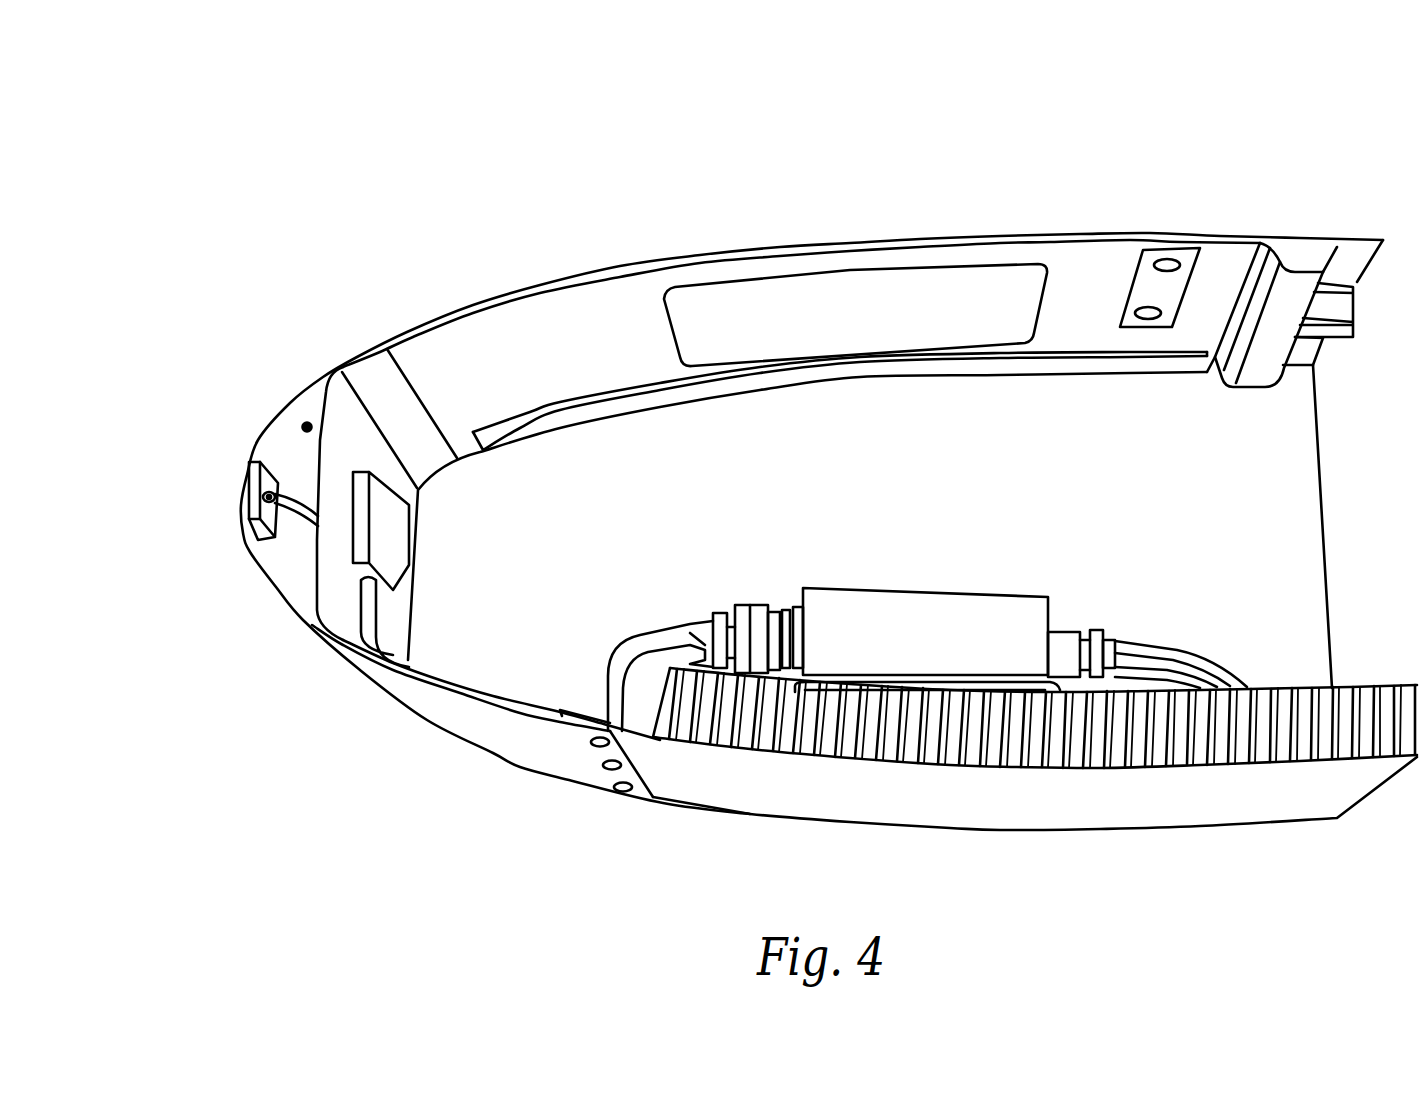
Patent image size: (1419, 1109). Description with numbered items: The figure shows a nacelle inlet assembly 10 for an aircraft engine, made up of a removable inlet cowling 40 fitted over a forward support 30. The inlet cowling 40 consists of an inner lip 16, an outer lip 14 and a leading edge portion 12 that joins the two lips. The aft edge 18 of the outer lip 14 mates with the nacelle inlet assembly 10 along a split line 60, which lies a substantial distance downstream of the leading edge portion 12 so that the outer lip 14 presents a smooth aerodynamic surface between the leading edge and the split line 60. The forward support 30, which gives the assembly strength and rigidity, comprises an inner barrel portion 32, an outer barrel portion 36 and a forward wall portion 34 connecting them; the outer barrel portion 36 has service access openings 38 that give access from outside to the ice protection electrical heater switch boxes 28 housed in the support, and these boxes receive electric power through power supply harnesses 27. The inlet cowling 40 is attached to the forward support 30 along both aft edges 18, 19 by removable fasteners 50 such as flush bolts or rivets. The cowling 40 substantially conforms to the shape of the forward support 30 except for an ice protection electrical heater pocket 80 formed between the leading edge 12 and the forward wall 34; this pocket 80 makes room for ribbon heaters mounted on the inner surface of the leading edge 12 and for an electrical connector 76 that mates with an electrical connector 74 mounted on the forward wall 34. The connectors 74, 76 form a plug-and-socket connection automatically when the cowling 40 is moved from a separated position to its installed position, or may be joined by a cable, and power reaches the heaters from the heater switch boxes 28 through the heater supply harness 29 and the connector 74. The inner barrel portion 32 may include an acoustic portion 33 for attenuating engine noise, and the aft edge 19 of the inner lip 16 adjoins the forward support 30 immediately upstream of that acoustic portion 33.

The nacelle inlet assembly 10 is at (165, 173).
The leading edge portion 12 is at (238, 493).
The outer lip 14 is at (626, 262).
The inner lip 16 is at (507, 748).
The aft edge 18 is at (1113, 232).
The aft edge 19 is at (628, 792).
The power supply harness 27 is at (1203, 660).
The ice protection electrical heater switch box 28 is at (937, 608).
The heater supply harness 29 is at (617, 637).
The forward support 30 is at (488, 251).
The inner barrel portion 32 is at (1103, 814).
The acoustic portion 33 is at (977, 754).
The forward wall portion 34 is at (326, 577).
The outer barrel portion 36 is at (804, 256).
The service access opening 38 is at (897, 284).
The inlet cowling 40 is at (225, 525).
The removable fastener 50 is at (1168, 262).
The split line 60 is at (1195, 236).
The electrical connector 74 is at (390, 535).
The electrical connector 76 is at (267, 522).
The ice protection electrical heater pocket 80 is at (302, 422).